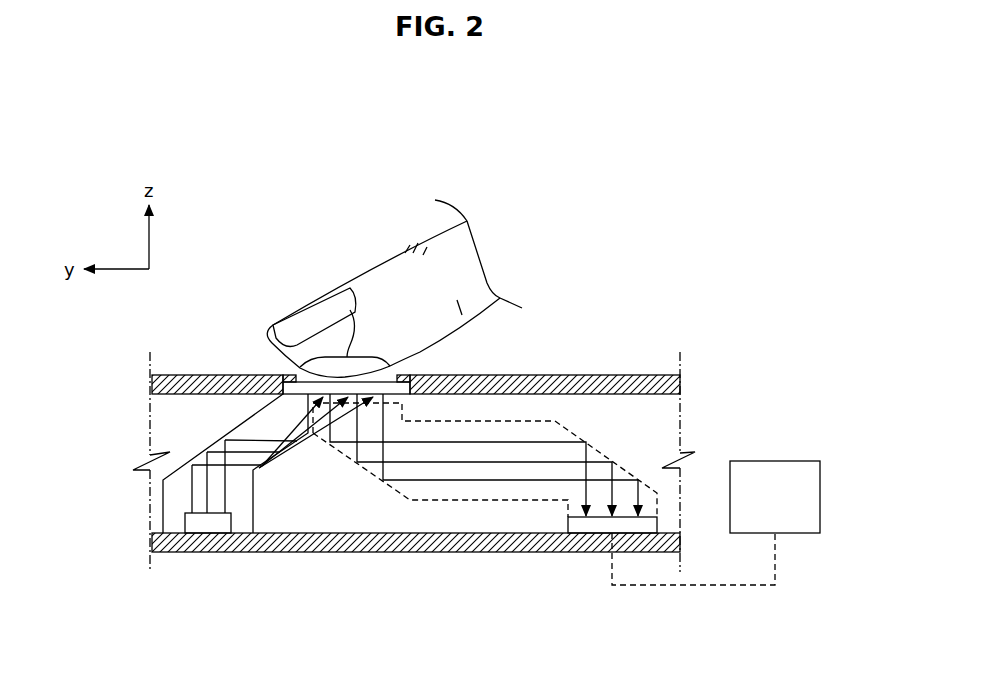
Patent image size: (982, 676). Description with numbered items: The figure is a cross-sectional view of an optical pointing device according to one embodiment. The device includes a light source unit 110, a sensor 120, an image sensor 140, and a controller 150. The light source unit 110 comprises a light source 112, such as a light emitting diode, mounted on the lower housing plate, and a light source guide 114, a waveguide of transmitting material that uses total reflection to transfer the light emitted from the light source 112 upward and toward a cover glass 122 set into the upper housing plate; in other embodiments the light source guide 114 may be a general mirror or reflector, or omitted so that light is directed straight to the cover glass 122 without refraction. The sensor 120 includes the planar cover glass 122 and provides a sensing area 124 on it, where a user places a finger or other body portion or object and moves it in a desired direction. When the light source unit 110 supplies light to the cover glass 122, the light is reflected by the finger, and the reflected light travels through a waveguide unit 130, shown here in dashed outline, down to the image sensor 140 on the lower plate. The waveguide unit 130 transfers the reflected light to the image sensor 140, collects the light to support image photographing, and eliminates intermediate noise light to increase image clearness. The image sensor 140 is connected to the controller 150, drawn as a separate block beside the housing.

The light source unit 110 is at (150, 506).
The light source 112 is at (217, 528).
The light source guide 114 is at (178, 474).
The sensor 120 is at (405, 288).
The cover glass 122 is at (292, 381).
The sensing area 124 is at (352, 308).
The waveguide unit 130 is at (576, 434).
The image sensor 140 is at (587, 528).
The controller 150 is at (776, 460).